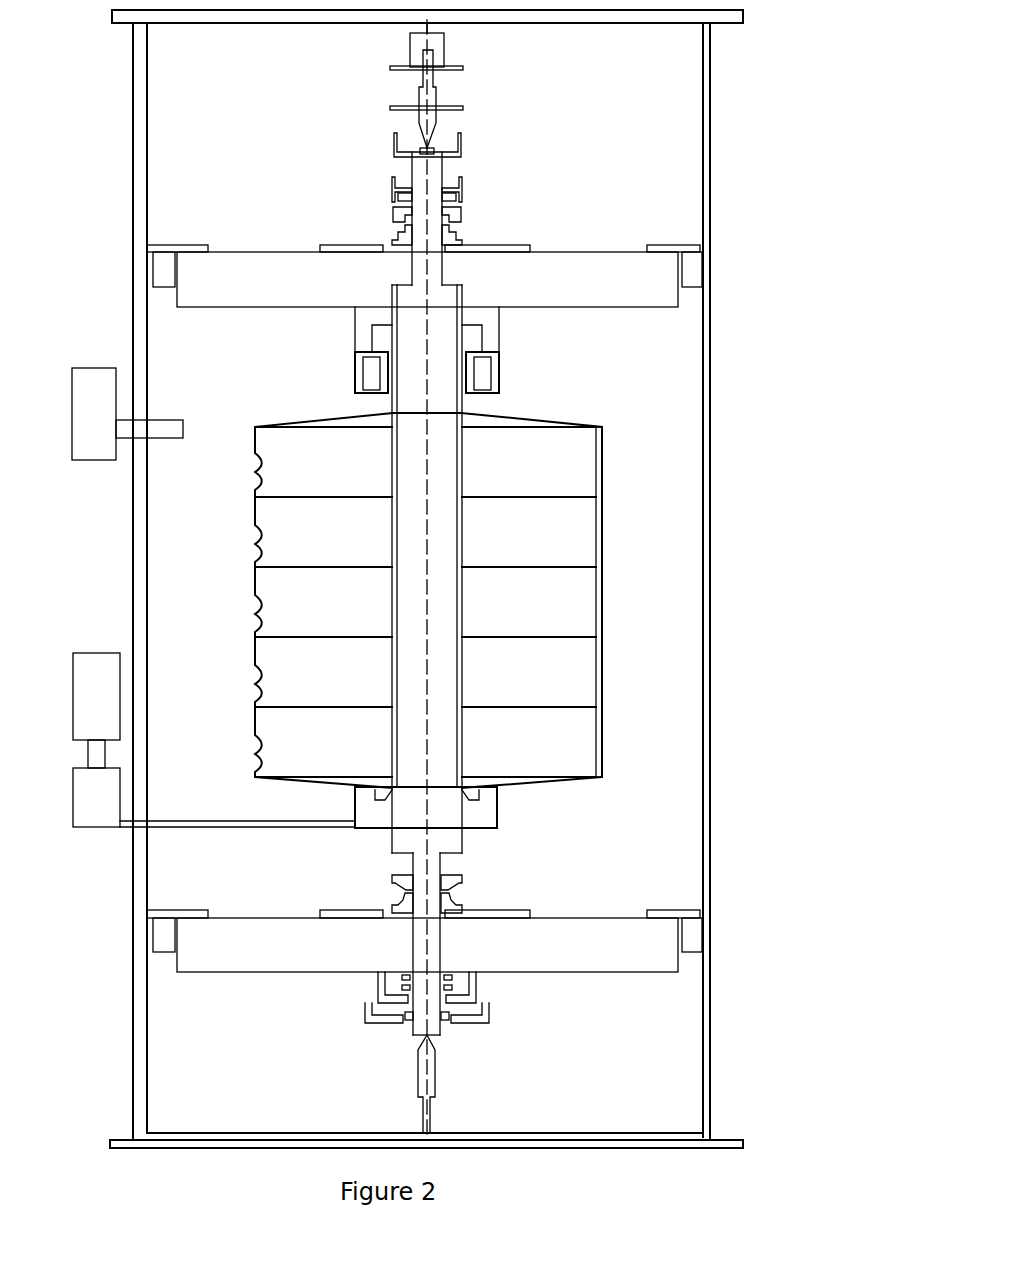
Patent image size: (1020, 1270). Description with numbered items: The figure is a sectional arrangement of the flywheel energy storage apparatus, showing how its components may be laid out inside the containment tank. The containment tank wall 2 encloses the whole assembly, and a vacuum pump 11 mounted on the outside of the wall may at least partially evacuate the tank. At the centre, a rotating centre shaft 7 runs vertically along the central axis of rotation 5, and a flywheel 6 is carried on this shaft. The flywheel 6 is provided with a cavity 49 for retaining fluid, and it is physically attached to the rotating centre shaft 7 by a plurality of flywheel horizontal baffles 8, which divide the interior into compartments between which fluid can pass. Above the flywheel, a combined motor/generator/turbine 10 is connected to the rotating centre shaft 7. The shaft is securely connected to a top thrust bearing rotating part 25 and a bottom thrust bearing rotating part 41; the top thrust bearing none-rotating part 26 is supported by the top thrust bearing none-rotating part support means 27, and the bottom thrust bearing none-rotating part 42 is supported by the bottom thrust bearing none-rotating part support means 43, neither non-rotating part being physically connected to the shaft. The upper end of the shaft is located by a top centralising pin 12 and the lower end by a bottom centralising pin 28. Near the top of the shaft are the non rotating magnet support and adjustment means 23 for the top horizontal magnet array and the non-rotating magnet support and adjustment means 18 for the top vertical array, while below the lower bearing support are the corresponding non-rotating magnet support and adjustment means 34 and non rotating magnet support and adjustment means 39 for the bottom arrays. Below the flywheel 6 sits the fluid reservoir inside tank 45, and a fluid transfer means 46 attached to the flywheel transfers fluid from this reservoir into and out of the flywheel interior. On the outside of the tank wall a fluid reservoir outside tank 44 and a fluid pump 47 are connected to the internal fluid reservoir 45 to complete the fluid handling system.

The containment tank wall 2 is at (426, 579).
The top centralising pin 12 is at (476, 85).
The non rotating magnet support and adjustment means 23 is at (393, 143).
The non-rotating magnet support and adjustment means 18 is at (393, 190).
The top thrust bearing rotating part 25 is at (478, 196).
The top thrust bearing none-rotating part 26 is at (365, 221).
The rotating centre shaft 7 is at (448, 308).
The top thrust bearing none-rotating part support means 27 is at (424, 265).
The combined motor/generator/turbine 10 is at (500, 358).
The central axis of rotation 5 is at (347, 577).
The vacuum pump 11 is at (145, 412).
The flywheel 6 is at (469, 602).
The cavity 49 is at (468, 600).
The flywheel horizontal baffles 8 is at (456, 602).
The fluid reservoir outside tank 44 is at (145, 696).
The fluid pump 47 is at (214, 772).
The fluid reservoir inside tank 45 is at (477, 818).
The fluid transfer means 46 is at (340, 833).
The bottom thrust bearing rotating part 41 is at (464, 872).
The bottom thrust bearing none-rotating part 42 is at (380, 889).
The bottom thrust bearing none-rotating part support means 43 is at (424, 925).
The non-rotating magnet support and adjustment means 34 is at (373, 998).
The non rotating magnet support and adjustment means 39 is at (381, 1042).
The bottom centralising pin 28 is at (477, 1084).